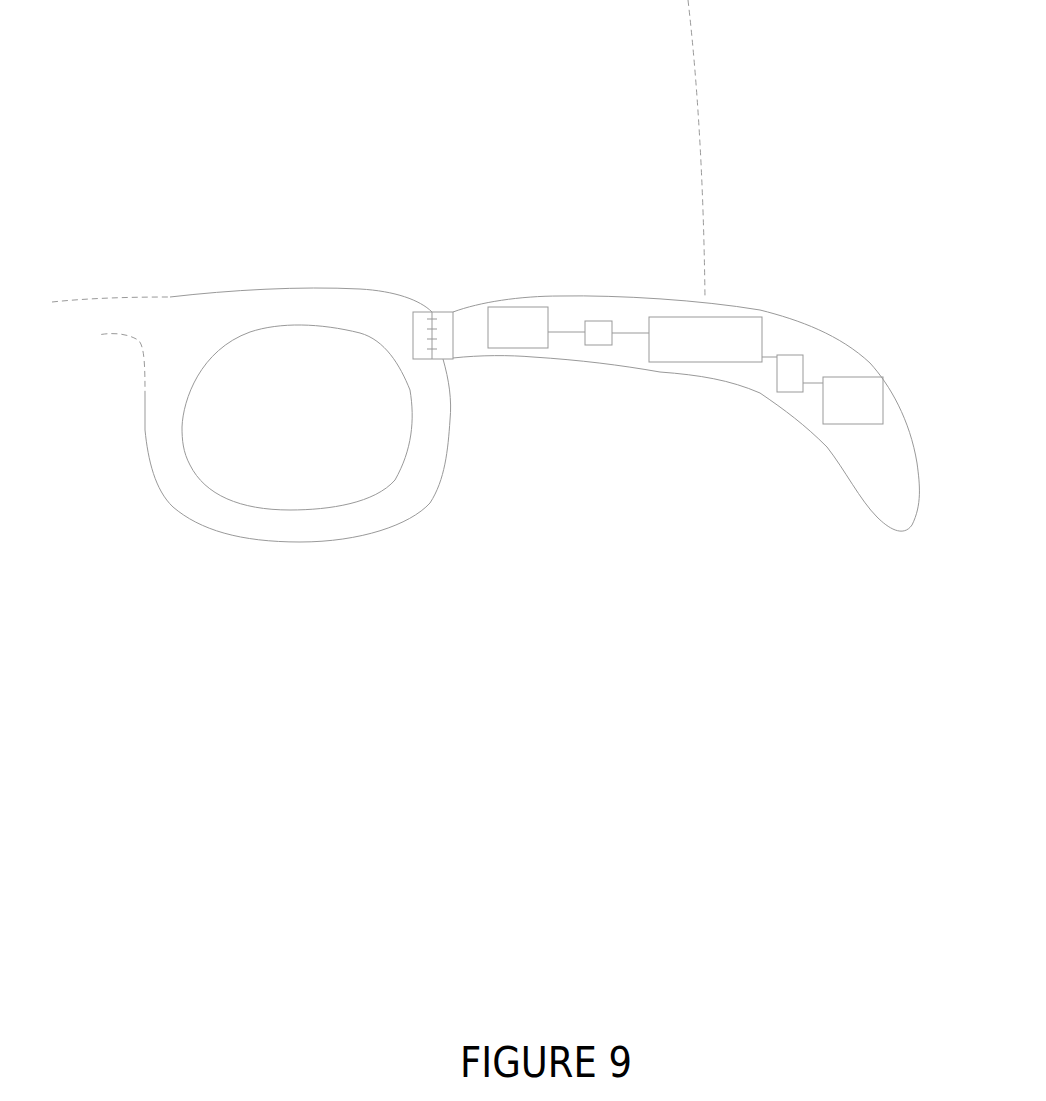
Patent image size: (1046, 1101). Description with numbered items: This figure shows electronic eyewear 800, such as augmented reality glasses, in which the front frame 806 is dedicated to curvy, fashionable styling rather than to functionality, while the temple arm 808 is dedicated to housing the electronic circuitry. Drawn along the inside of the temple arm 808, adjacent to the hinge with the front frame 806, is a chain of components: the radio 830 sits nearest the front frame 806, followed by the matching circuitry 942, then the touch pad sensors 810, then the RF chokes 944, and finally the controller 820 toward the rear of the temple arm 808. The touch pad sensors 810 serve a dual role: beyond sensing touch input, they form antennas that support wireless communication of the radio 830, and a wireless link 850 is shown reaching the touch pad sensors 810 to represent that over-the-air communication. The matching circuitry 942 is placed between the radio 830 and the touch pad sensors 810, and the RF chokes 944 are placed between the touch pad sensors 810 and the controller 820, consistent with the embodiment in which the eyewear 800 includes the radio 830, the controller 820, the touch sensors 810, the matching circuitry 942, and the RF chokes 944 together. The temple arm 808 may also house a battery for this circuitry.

The eyewear 800 is at (500, 398).
The front frame 806 is at (206, 306).
The temple arm 808 is at (860, 470).
The touch pad sensors 810 is at (707, 359).
The controller 820 is at (867, 315).
The radio 830 is at (520, 309).
The wireless link 850 is at (778, 158).
The matching circuitry 942 is at (596, 315).
The RF chokes 944 is at (783, 355).